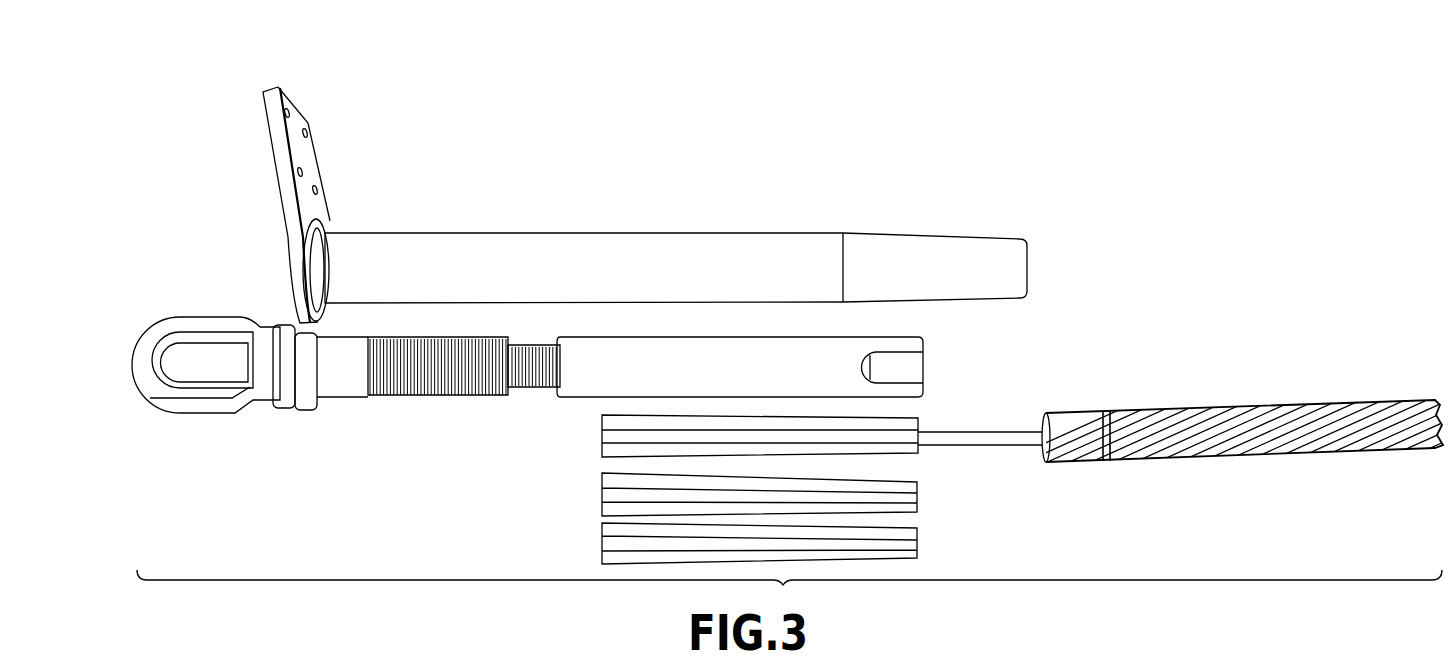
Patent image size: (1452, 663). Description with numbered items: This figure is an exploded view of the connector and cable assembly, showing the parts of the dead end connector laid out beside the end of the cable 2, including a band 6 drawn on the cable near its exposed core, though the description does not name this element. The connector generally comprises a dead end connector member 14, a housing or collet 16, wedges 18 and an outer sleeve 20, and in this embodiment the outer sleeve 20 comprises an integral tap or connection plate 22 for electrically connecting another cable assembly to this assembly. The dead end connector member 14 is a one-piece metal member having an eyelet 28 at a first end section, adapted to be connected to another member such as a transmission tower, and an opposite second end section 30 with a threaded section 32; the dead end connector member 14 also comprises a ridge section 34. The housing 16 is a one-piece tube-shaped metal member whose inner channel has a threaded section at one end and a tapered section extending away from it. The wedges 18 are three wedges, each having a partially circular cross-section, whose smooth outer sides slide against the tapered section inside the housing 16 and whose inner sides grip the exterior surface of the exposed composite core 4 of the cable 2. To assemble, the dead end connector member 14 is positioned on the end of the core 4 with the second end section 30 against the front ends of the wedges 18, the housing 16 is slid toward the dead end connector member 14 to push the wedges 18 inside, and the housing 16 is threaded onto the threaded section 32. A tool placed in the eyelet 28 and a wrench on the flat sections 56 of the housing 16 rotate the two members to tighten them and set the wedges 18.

The cable 2 is at (1158, 447).
The core 4 is at (975, 450).
The band 6 is at (1205, 417).
The dead end connector member 14 is at (222, 405).
The housing 16 is at (923, 357).
The wedges 18 is at (607, 443).
The outer sleeve 20 is at (558, 233).
The connection plate 22 is at (272, 119).
The eyelet 28 is at (152, 318).
The second end section 30 is at (538, 388).
The threaded section 32 is at (514, 390).
The ridge section 34 is at (416, 397).
The flat sections 56 is at (913, 368).